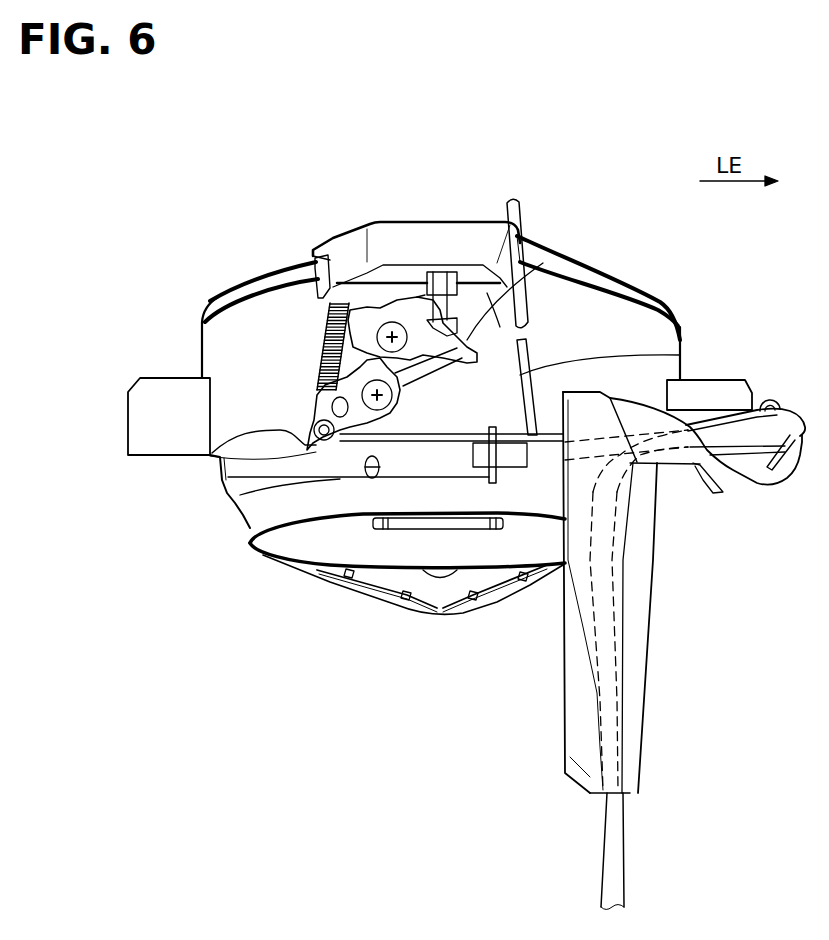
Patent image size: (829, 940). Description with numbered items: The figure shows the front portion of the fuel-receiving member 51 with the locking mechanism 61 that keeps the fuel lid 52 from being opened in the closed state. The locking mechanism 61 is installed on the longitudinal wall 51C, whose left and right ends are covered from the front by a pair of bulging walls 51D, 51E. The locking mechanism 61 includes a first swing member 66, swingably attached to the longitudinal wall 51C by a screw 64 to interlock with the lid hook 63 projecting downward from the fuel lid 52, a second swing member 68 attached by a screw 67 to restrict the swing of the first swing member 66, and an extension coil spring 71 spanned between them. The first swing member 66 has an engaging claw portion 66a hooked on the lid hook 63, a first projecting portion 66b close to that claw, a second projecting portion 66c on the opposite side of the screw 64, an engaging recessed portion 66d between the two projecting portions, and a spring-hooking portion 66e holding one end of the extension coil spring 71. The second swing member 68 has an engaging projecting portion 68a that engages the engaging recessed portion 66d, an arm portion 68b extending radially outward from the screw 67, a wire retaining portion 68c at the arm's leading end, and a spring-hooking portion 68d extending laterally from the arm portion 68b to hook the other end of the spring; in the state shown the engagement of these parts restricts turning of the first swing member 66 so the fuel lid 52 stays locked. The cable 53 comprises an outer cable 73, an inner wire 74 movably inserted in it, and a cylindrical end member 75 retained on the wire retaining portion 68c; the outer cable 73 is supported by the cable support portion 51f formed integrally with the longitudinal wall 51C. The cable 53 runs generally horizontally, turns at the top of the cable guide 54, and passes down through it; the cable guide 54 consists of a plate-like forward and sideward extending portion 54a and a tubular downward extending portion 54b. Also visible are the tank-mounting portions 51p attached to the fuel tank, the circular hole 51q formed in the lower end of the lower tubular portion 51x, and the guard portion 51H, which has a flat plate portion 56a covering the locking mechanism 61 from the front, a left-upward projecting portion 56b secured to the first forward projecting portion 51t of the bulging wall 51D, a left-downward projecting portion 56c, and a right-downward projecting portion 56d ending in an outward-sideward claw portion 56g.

The fuel-receiving member 51 is at (195, 337).
The longitudinal wall 51C is at (482, 238).
The bulging wall 51D is at (658, 338).
The bulging wall 51E is at (233, 363).
The guard portion 51H is at (415, 214).
The cable support portion 51f is at (503, 478).
The tank-mounting portion 51p is at (137, 440).
The circular hole 51q is at (267, 540).
The first forward projecting portion 51t is at (680, 355).
The lower tubular portion 51x is at (255, 513).
The fuel lid 52 is at (648, 283).
The cable 53 is at (805, 405).
The cable guide 54 is at (652, 630).
The forward and sideward extending portion 54a is at (790, 472).
The downward extending portion 54b is at (633, 713).
The flat plate portion 56a is at (445, 262).
The left-upward projecting portion 56b is at (517, 203).
The left-downward projecting portion 56c is at (525, 335).
The right-downward projecting portion 56d is at (310, 256).
The claw portion 56g is at (302, 262).
The locking mechanism 61 is at (420, 297).
The lid hook 63 is at (447, 245).
The screw 64 is at (331, 262).
The first swing member 66 is at (386, 322).
The engaging claw portion 66a is at (432, 270).
The first projecting portion 66b is at (492, 288).
The second projecting portion 66c is at (332, 302).
The engaging recessed portion 66d is at (318, 390).
The spring-hooking portion 66e is at (340, 300).
The screw 67 is at (365, 433).
The second swing member 68 is at (321, 453).
The engaging projecting portion 68a is at (338, 306).
The arm portion 68b is at (336, 388).
The wire retaining portion 68c is at (314, 437).
The spring-hooking portion 68d is at (330, 370).
The extension coil spring 71 is at (322, 348).
The outer cable 73 is at (543, 457).
The inner wire 74 is at (418, 452).
The end member 75 is at (370, 425).